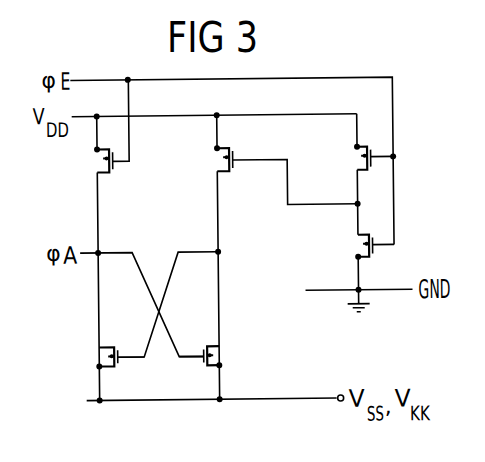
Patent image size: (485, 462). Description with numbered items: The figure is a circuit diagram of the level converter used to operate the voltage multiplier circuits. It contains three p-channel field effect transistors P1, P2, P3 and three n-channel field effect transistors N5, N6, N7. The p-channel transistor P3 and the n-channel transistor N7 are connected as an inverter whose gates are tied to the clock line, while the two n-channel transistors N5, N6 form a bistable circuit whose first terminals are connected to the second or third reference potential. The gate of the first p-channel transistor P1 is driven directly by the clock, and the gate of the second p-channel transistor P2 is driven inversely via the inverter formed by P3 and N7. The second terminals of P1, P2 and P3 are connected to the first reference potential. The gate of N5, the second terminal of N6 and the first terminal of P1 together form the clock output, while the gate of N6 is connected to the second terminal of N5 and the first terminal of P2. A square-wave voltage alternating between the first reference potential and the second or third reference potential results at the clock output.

The first p-channel field effect transistor P1 is at (98, 129).
The second p-channel field effect transistor P2 is at (270, 174).
The third p-channel field effect transistor P3 is at (359, 159).
The fifth n-channel field effect transistor N5 is at (216, 353).
The sixth n-channel field effect transistor N6 is at (106, 357).
The seventh n-channel field effect transistor N7 is at (360, 246).